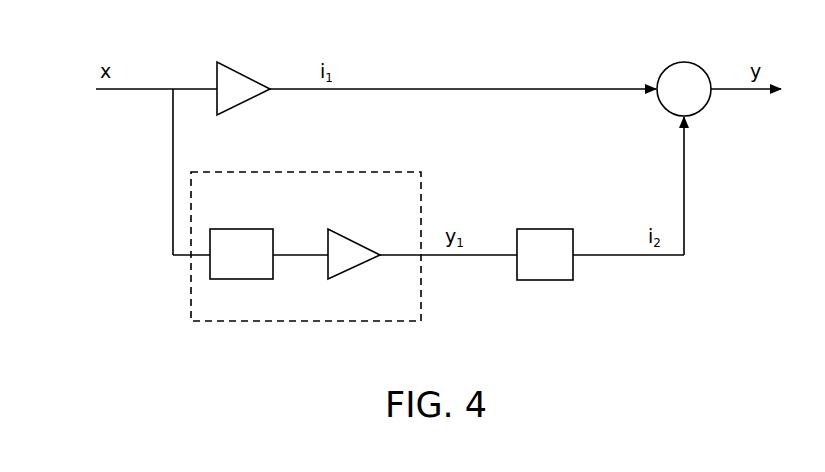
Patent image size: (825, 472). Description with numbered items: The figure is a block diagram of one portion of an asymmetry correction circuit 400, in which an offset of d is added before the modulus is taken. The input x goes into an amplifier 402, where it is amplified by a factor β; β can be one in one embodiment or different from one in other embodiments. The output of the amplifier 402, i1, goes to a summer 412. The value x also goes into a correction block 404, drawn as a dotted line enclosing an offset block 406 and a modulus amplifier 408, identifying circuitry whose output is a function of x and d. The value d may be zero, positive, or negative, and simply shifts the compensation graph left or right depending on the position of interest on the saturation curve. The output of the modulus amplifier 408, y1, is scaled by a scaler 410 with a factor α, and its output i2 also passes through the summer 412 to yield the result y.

The asymmetry correction circuit portion 400 is at (671, 272).
The amplifier 402 is at (241, 58).
The correction block 404 is at (439, 184).
The offset block 406 is at (249, 227).
The modulus amplifier 408 is at (362, 235).
The scaler 410 is at (556, 228).
The summer 412 is at (711, 58).